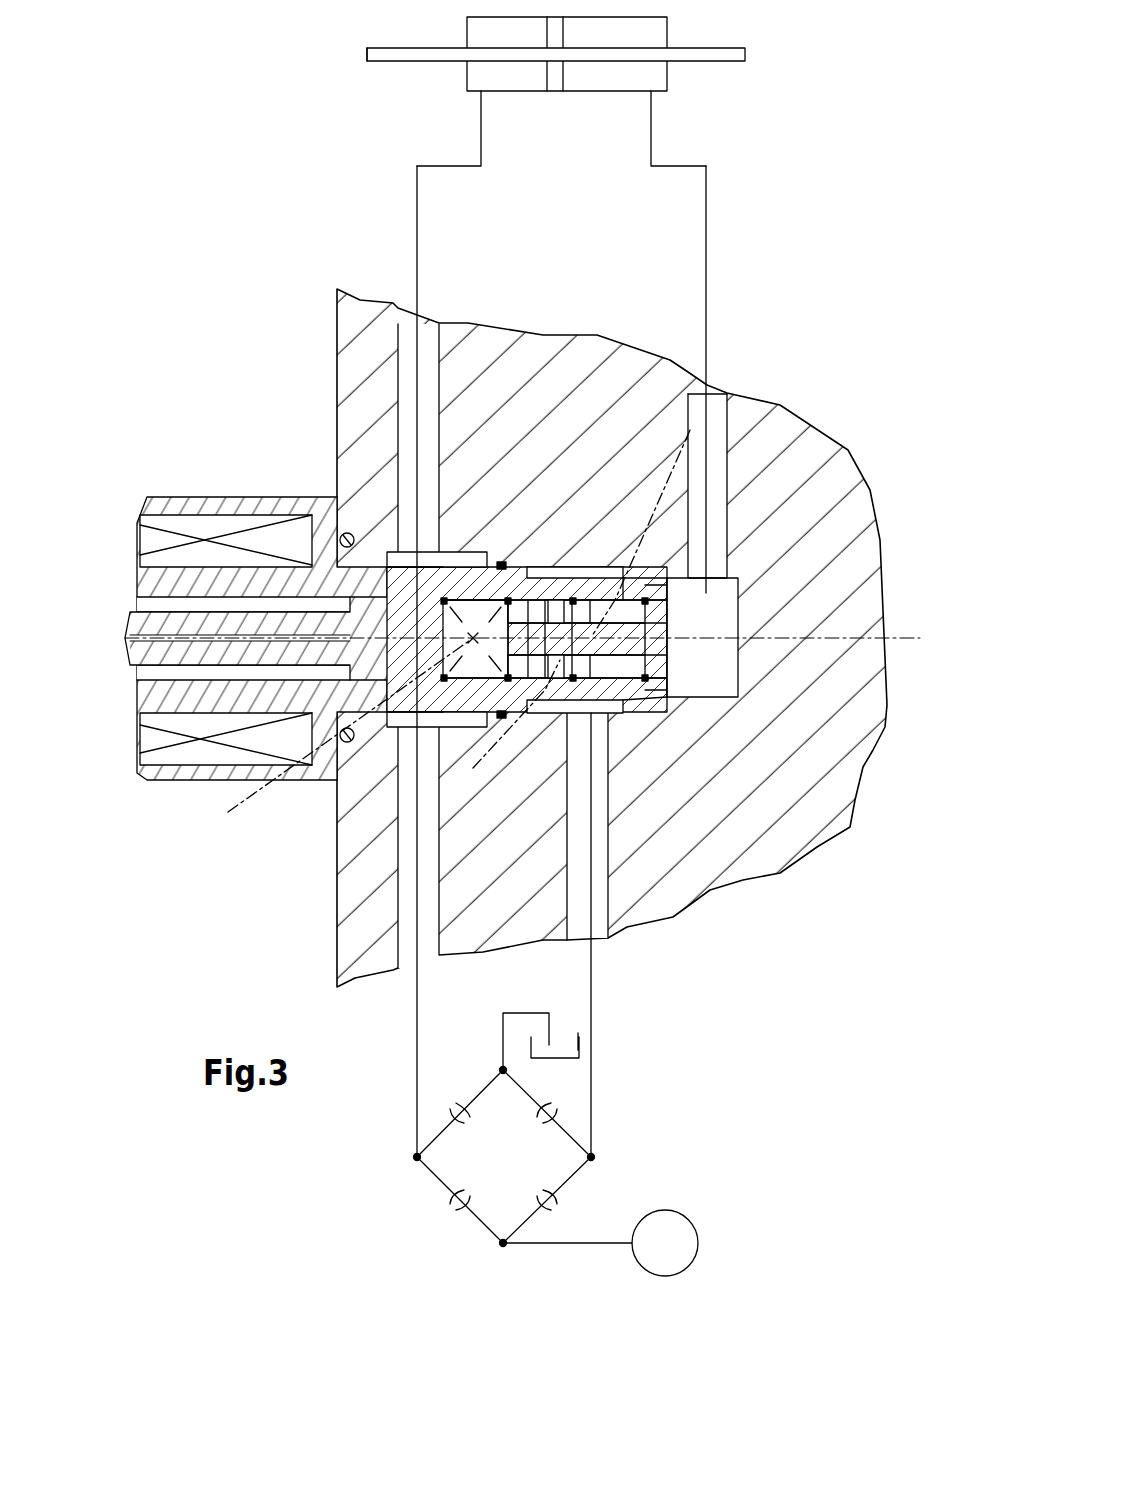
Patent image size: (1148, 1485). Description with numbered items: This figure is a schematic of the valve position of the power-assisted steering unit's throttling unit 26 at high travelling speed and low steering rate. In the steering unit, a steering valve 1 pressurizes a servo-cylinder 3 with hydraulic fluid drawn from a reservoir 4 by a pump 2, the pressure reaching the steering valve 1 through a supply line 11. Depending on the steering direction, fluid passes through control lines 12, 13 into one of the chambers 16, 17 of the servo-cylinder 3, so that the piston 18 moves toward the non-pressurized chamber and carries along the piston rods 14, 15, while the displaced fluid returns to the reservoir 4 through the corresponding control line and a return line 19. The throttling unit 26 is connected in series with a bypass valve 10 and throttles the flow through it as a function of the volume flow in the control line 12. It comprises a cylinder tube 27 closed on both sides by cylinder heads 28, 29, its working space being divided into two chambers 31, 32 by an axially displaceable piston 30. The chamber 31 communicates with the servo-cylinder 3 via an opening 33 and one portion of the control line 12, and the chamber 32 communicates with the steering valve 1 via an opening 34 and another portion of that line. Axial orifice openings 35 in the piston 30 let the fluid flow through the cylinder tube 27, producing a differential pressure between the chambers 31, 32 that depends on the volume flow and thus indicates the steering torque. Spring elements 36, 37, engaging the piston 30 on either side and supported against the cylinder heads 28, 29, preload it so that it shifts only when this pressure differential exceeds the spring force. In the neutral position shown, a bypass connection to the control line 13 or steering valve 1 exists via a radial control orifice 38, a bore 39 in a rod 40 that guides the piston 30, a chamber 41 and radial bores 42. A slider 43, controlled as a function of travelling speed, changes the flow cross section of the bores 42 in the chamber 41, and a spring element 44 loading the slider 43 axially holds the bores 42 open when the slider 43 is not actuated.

The steering valve 1 is at (540, 1158).
The pump 2 is at (675, 1243).
The servo-cylinder 3 is at (692, 28).
The reservoir 4 is at (573, 1050).
The bypass valve 10 is at (443, 618).
The supply line 11 is at (567, 1243).
The control line 12 is at (706, 190).
The control line 13 is at (417, 200).
The piston rod 14 is at (728, 58).
The piston rod 15 is at (398, 55).
The chamber 16 is at (657, 78).
The chamber 17 is at (481, 75).
The piston 18 is at (555, 75).
The return line 19 is at (527, 1013).
The throttling unit 26 is at (632, 593).
The cylinder tube 27 is at (636, 681).
The cylinder head 28 is at (663, 677).
The cylinder head 29 is at (522, 567).
The piston 30 is at (620, 690).
The chamber 31 is at (655, 580).
The chamber 32 is at (548, 690).
The opening 33 is at (660, 608).
The opening 34 is at (560, 567).
The orifice openings 35 is at (588, 567).
The spring element 36 is at (633, 567).
The spring element 37 is at (506, 726).
The radial control orifice 38 is at (577, 685).
The bore 39 is at (505, 650).
The rod 40 is at (660, 632).
The chamber 41 is at (469, 567).
The radial bores 42 is at (288, 404).
The slider 43 is at (195, 620).
The spring element 44 is at (483, 567).